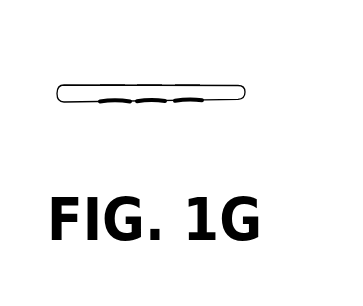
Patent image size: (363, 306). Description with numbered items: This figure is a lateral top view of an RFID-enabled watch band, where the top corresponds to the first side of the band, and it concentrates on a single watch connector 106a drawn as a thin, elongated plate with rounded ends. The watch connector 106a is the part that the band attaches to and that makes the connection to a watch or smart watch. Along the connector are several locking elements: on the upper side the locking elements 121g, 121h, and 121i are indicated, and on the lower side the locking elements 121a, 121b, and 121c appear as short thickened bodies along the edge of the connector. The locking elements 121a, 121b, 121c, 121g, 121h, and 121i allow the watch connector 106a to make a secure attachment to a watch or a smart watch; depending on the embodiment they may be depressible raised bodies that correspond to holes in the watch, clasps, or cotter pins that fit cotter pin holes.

The watch connector 106a is at (220, 92).
The locking element 121g is at (112, 85).
The locking element 121h is at (148, 102).
The locking element 121i is at (182, 85).
The locking element 121a is at (188, 103).
The locking element 121b is at (148, 102).
The locking element 121c is at (112, 104).